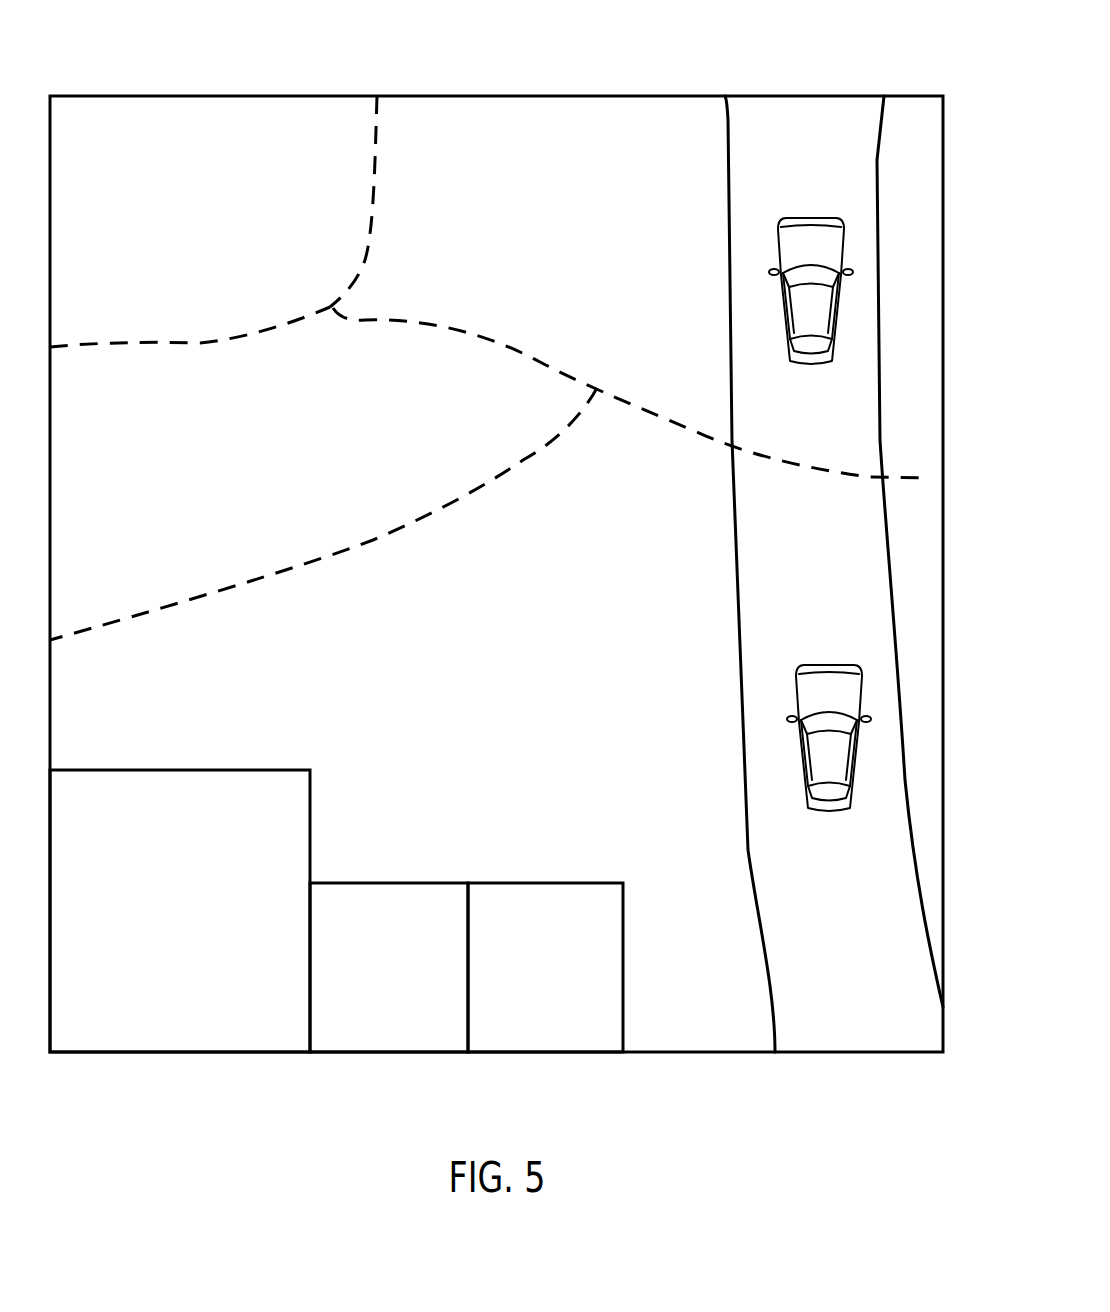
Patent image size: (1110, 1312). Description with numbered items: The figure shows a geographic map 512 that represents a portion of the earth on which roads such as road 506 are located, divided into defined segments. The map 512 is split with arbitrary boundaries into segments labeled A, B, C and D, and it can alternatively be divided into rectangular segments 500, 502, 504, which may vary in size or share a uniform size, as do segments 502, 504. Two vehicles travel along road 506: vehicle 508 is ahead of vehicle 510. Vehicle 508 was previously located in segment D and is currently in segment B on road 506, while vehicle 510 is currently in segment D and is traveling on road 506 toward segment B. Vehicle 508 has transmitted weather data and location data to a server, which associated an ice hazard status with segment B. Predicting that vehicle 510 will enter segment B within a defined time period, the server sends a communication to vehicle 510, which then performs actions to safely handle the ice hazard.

The rectangular segment 500 is at (180, 911).
The rectangular segment 502 is at (389, 967).
The rectangular segment 504 is at (545, 967).
The road 506 is at (877, 160).
The vehicle 508 is at (820, 366).
The vehicle 510 is at (851, 812).
The geographic map 512 is at (557, 95).